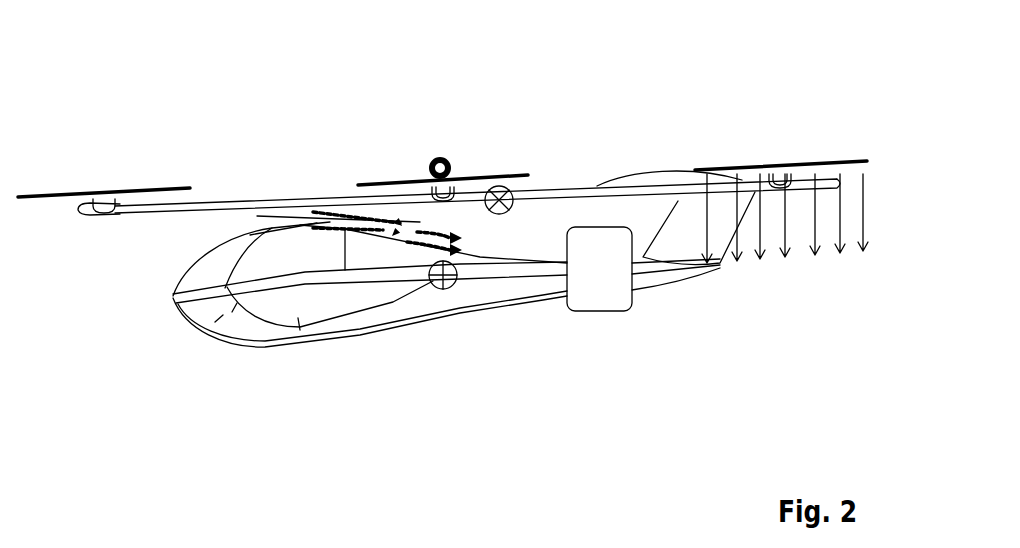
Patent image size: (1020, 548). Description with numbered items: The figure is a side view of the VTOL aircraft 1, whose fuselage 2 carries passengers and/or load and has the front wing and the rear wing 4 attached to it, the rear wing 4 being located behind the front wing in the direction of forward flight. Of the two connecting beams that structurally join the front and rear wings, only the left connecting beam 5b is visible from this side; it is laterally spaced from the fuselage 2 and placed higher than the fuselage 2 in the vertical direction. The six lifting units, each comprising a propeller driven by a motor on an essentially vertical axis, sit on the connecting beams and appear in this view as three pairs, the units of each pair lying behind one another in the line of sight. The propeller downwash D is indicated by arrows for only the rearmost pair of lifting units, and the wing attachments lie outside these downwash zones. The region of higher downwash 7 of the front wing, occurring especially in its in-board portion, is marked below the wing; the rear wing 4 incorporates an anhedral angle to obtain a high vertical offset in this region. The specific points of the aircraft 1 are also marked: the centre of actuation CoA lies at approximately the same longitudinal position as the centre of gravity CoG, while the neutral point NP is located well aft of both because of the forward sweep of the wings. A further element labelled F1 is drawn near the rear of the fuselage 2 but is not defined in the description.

The VTOL aircraft 1 is at (608, 112).
The fuselage 2 is at (465, 310).
The rear wing 4 is at (680, 243).
The left connecting beam 5b is at (173, 210).
The region of higher downwash 7 is at (380, 243).
The force F1 element F1 is at (603, 280).
The propeller downwash D is at (850, 258).
The centre of actuation CoA is at (427, 170).
The centre of gravity CoG is at (443, 295).
The neutral point NP is at (500, 220).